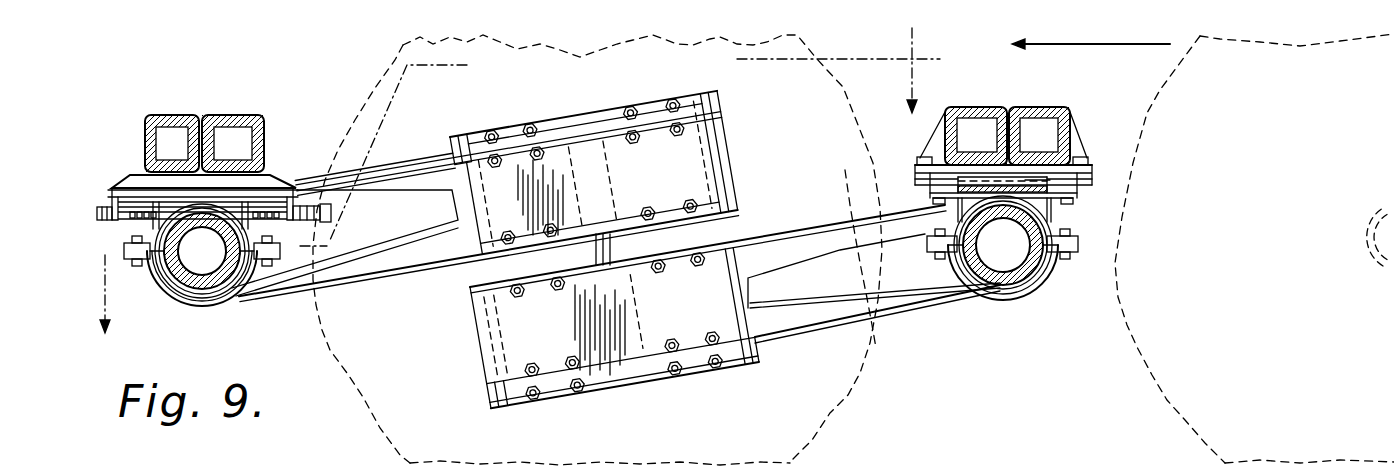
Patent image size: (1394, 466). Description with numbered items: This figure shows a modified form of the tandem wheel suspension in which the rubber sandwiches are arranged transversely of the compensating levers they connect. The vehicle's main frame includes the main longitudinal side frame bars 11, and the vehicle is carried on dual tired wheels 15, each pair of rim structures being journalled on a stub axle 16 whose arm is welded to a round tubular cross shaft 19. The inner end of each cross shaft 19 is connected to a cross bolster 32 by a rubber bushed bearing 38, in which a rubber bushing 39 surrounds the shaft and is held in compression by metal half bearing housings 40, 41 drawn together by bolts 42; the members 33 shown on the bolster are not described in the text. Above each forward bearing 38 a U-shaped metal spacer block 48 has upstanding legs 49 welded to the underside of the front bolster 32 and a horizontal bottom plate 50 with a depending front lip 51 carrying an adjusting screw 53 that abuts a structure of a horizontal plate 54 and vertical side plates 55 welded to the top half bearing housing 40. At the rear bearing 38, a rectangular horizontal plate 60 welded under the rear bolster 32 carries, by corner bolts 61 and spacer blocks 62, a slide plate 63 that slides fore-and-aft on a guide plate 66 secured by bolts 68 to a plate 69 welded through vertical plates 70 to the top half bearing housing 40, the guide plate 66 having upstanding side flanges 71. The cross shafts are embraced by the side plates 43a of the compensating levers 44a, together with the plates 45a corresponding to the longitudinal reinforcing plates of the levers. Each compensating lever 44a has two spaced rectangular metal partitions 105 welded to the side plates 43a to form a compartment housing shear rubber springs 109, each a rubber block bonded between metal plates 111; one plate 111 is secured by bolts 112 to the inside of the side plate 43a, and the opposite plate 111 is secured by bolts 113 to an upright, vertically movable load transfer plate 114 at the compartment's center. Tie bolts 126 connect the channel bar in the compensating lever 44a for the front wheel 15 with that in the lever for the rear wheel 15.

The main longitudinal side frame bars 11 is at (635, 191).
The wheels 15 is at (827, 422).
The stub axle 16 is at (1372, 214).
The cross shaft 19 is at (163, 284).
The cross bolster 32 is at (647, 207).
The tubular members 33 is at (660, 161).
The bearing 38 is at (205, 307).
The rubber bushing 39 is at (183, 292).
The top half bearing housing 40 is at (215, 207).
The half bearing housing 41 is at (250, 290).
The bolts 42 is at (290, 283).
The side plates 43a is at (742, 190).
The compensating lever 44a is at (703, 250).
The rail 45a is at (440, 235).
The U-shaped metal spacer block 48 is at (172, 192).
The upstanding legs 49 is at (131, 166).
The horizontal bottom plate 50 is at (272, 190).
The depending front lip 51 is at (112, 224).
The adjusting screw 53 is at (124, 176).
The horizontal plate 54 is at (158, 195).
The vertical side plates 55 is at (202, 251).
The rectangular horizontal plate 60 is at (1070, 160).
The corner bolts 61 is at (1087, 160).
The spacer blocks 62 is at (1095, 167).
The slide plate 63 is at (1097, 176).
The guide plate 66 is at (1098, 184).
The bolts 68 is at (1100, 196).
The plate 69 is at (915, 189).
The vertical plates 70 is at (898, 247).
The upstanding side flanges 71 is at (1028, 178).
The rectangular metal partitions 105 is at (452, 148).
The rectilinear movement shear rubber springs 109 is at (548, 118).
The metal plates 111 is at (488, 142).
The bolts 112 is at (534, 162).
The bolts 113 is at (508, 118).
The load transfer plate 114 is at (588, 128).
The tie bolts 126 is at (595, 252).